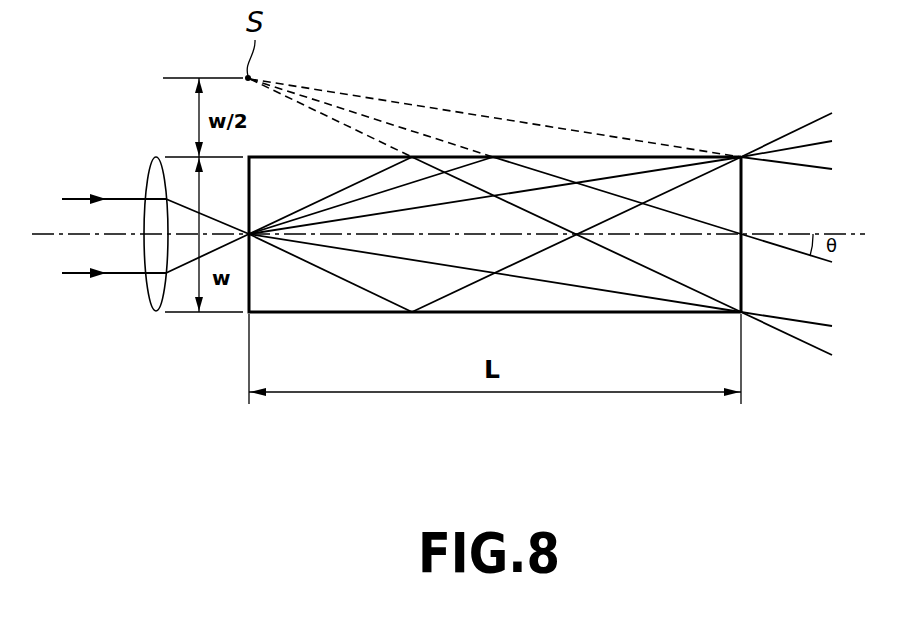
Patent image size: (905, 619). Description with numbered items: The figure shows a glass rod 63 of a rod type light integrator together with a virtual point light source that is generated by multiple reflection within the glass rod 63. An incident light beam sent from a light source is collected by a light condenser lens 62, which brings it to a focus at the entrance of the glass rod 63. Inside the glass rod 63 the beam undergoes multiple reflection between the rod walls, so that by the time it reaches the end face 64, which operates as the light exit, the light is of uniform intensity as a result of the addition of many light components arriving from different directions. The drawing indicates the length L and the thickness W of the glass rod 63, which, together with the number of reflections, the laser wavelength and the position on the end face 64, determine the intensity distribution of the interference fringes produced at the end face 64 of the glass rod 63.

The light condenser lens 62 is at (154, 178).
The glass rod 63 is at (622, 157).
The end face 64 is at (742, 183).